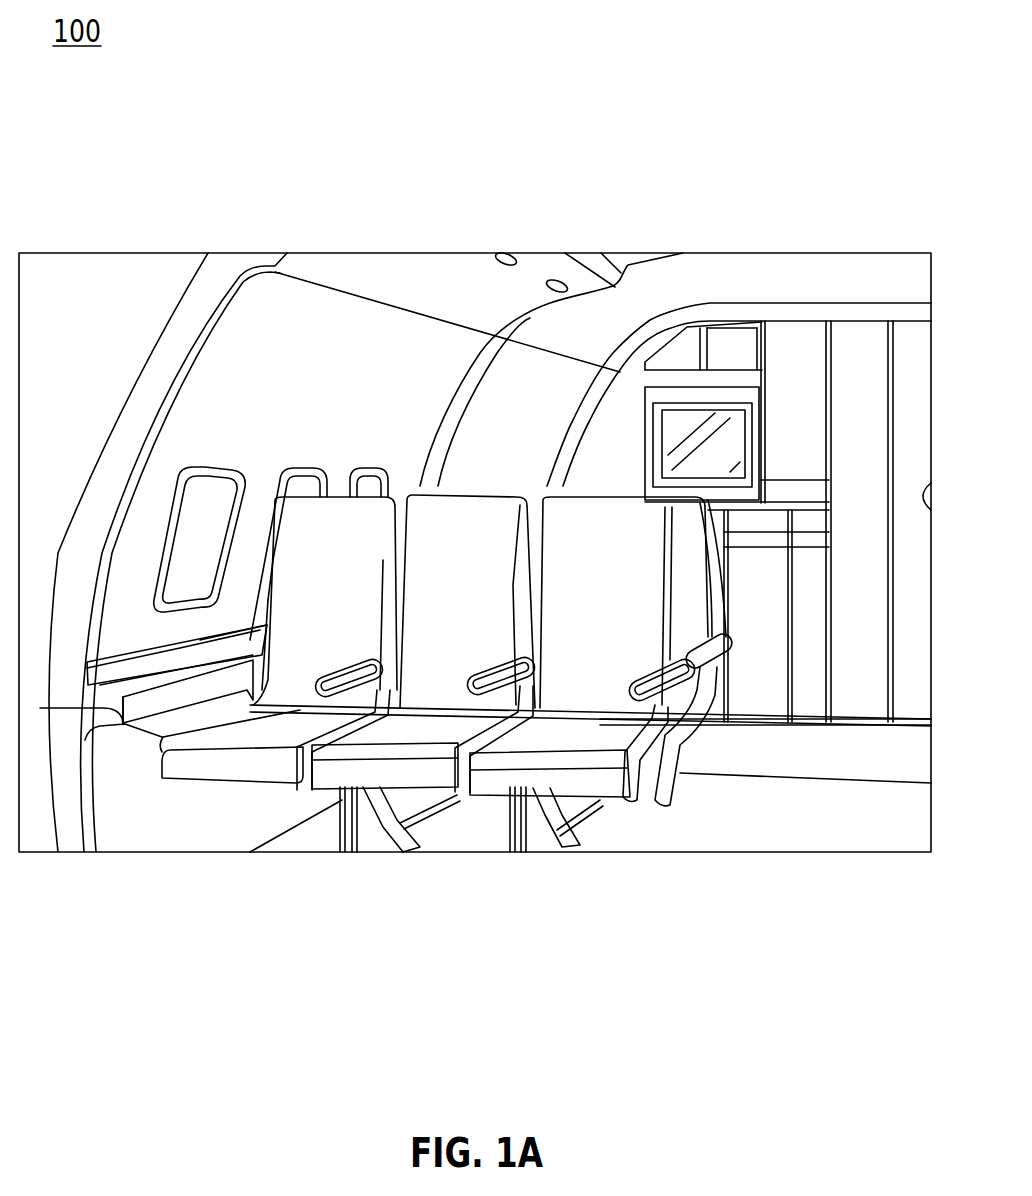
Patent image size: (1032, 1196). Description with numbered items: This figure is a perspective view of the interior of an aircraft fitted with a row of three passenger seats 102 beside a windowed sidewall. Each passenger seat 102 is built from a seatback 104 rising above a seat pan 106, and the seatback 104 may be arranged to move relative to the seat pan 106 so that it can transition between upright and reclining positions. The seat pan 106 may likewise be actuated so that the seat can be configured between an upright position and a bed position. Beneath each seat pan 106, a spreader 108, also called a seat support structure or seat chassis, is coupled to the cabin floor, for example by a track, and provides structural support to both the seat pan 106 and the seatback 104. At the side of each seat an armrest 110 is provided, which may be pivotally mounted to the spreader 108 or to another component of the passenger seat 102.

The passenger seat 102 is at (341, 472).
The seatback 104 is at (622, 636).
The seat pan 106 is at (568, 751).
The spreader 108 is at (635, 878).
The armrest 110 is at (640, 677).